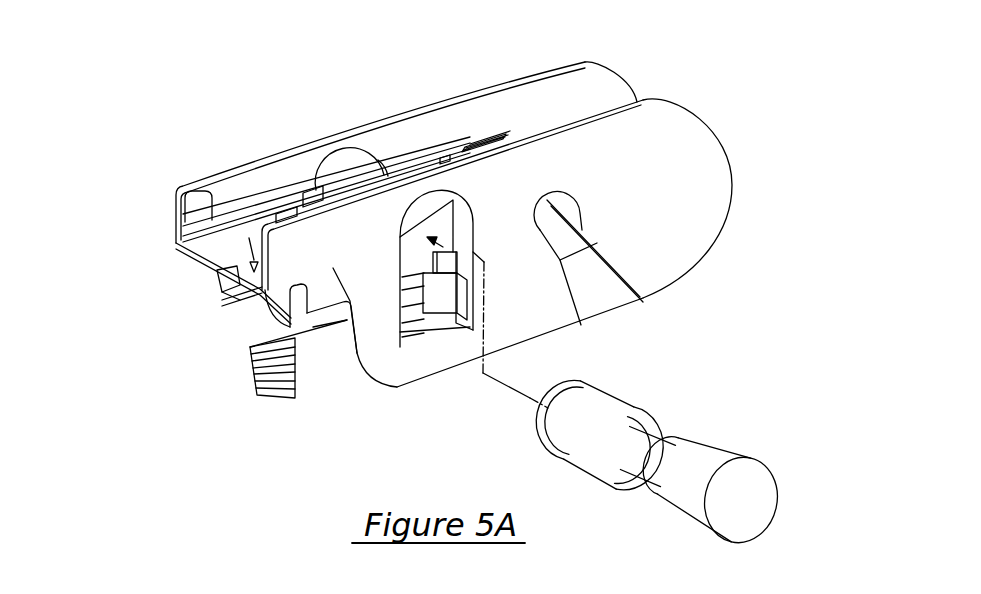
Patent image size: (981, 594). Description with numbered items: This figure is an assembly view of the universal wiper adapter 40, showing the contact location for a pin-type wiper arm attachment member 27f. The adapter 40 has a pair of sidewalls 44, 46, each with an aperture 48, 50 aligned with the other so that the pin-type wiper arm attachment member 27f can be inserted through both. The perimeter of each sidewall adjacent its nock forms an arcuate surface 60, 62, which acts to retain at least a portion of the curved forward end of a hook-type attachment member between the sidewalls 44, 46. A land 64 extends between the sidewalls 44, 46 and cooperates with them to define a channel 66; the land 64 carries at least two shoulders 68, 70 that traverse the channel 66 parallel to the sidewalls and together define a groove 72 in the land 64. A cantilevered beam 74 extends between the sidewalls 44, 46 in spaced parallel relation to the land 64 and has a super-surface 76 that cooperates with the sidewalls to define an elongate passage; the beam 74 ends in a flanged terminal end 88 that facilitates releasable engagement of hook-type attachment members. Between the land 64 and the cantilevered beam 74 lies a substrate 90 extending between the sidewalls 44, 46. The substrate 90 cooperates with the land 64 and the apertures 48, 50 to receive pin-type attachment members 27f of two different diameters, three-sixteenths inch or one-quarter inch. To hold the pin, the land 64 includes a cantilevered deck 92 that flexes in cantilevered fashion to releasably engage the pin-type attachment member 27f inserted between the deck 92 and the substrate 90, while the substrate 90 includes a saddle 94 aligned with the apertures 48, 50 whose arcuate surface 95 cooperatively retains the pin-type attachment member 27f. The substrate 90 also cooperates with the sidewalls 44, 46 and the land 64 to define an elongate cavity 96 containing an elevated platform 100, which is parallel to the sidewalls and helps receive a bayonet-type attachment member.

The sidewall 46 is at (513, 67).
The arcuate surface 62 is at (630, 82).
The arcuate surface 60 is at (733, 177).
The universal wiper adapter 40 is at (777, 263).
The sidewall 44 is at (573, 327).
The aperture 48 is at (490, 238).
The arcuate surface 95 is at (407, 258).
The saddle 94 is at (422, 270).
The channel 66 is at (160, 208).
The groove 72 is at (158, 245).
The shoulder 70 is at (206, 218).
The land 64 is at (228, 248).
The shoulder 68 is at (249, 238).
The cantilevered deck 92 is at (309, 190).
The aperture 50 is at (349, 168).
The elevated platform 100 is at (217, 275).
The elongate cavity 96 is at (212, 300).
The substrate 90 is at (240, 303).
The cantilevered beam 74 is at (320, 364).
The super-surface 76 is at (283, 353).
The flanged terminal end 88 is at (268, 392).
The pin-type wiper arm attachment member 27f is at (727, 449).